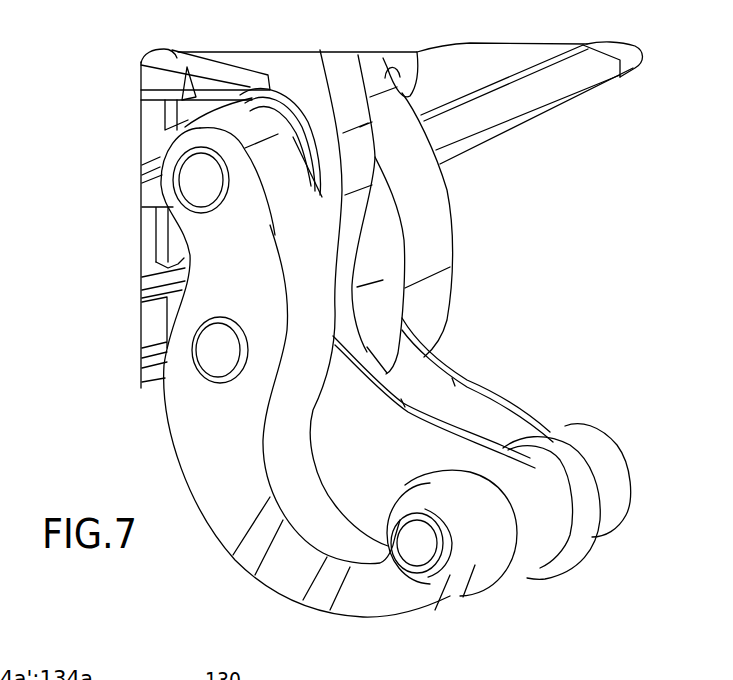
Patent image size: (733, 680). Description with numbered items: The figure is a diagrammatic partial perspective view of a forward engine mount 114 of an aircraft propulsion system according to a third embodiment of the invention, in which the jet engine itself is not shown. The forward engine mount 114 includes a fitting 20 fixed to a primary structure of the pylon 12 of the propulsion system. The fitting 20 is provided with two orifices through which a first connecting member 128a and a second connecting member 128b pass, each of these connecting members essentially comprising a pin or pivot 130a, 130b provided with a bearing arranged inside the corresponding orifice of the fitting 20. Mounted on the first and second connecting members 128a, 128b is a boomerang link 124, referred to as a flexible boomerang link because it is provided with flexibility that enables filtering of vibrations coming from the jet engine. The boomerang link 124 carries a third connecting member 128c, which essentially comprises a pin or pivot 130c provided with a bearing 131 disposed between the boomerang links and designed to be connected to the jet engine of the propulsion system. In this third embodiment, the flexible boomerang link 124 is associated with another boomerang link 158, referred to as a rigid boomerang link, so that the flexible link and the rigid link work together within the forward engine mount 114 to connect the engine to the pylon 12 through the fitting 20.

The pylon 12 is at (611, 77).
The fitting 20 is at (297, 70).
The forward engine mount 114 is at (637, 206).
The boomerang link 124 is at (619, 453).
The first connecting member 128a is at (186, 148).
The second connecting member 128b is at (222, 384).
The third connecting member 128c is at (428, 579).
The pin or pivot 130a is at (200, 182).
The pin or pivot 130b is at (217, 352).
The pin or pivot 130c is at (432, 552).
The bearing 131 is at (560, 535).
The rigid boomerang link 158 is at (458, 424).